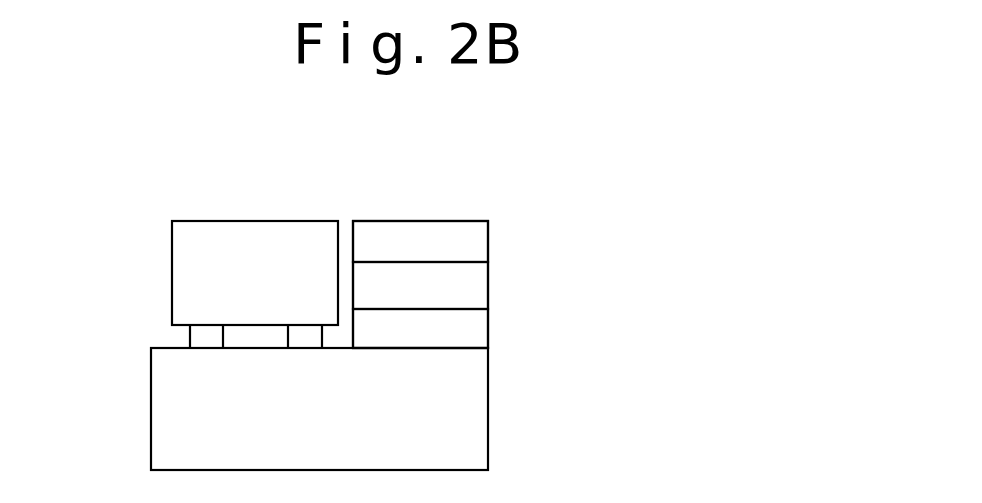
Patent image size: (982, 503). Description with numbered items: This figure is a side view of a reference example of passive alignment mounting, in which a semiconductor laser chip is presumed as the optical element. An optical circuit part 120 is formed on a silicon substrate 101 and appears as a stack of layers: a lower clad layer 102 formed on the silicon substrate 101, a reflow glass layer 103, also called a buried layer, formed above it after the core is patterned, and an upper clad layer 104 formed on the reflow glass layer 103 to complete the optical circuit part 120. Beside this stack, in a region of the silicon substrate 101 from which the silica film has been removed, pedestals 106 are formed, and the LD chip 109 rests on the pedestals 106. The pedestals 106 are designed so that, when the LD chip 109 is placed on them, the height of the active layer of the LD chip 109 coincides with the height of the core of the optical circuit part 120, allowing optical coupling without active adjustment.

The silicon substrate 101 is at (479, 418).
The lower clad layer 102 is at (477, 331).
The reflow glass layer 103 is at (477, 296).
The upper clad layer 104 is at (477, 240).
The pedestals 106 is at (190, 341).
The LD chip 109 is at (195, 227).
The optical circuit part 120 is at (628, 271).